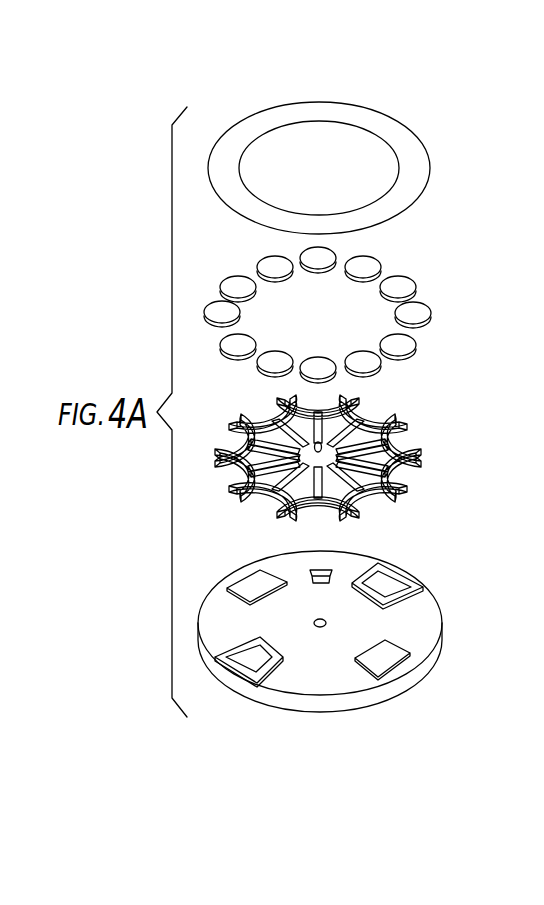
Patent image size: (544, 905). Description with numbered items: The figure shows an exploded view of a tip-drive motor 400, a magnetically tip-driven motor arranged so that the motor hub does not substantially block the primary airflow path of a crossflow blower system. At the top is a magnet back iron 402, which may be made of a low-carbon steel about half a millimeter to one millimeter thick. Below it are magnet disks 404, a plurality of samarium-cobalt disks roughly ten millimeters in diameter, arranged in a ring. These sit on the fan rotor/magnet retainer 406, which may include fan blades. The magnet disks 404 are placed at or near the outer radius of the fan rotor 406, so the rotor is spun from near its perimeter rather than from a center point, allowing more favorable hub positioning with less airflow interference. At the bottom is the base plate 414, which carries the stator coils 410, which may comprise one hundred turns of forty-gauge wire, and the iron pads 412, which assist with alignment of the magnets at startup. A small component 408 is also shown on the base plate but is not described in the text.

The tip-drive motor 400 is at (127, 81).
The magnet back iron 402 is at (423, 193).
The magnet disks 404 is at (418, 348).
The fan rotor/magnet retainer 406 is at (430, 442).
The sensor 408 is at (323, 572).
The stator coils 410 is at (423, 585).
The iron pads 412 is at (440, 635).
The base plate 414 is at (353, 712).